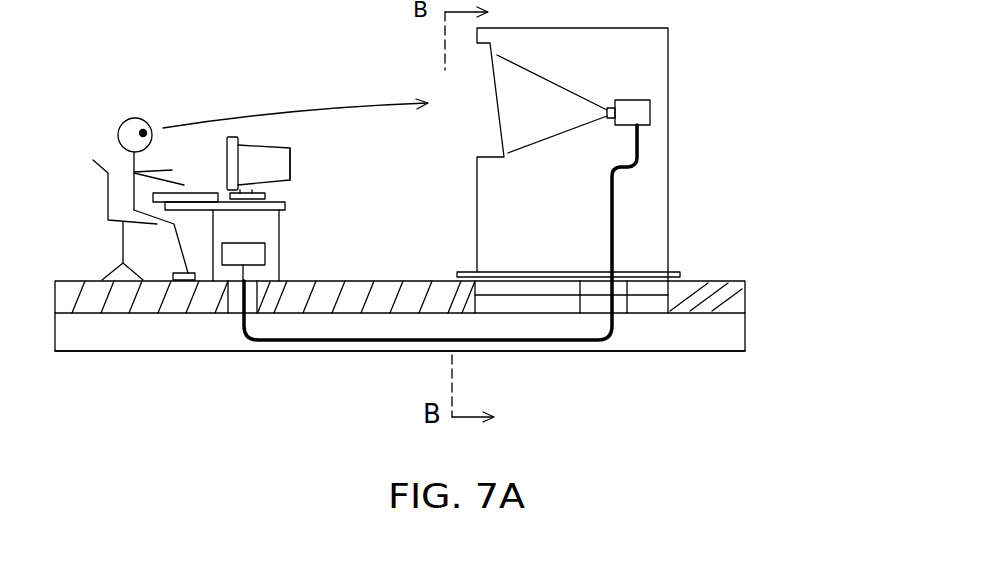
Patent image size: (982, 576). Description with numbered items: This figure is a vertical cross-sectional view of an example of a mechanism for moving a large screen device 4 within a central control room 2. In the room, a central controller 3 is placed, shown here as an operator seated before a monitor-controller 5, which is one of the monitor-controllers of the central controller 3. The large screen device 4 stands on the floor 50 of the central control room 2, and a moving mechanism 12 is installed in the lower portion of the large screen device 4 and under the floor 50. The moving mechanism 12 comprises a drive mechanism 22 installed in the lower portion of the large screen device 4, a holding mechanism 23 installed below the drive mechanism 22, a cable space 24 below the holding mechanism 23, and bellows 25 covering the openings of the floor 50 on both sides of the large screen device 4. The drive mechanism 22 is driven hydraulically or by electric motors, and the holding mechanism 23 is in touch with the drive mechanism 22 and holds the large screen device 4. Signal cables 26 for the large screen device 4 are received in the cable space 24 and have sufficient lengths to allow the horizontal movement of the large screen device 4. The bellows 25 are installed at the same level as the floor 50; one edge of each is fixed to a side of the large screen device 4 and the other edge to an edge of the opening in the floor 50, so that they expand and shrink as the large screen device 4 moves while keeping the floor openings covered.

The central control room 2 is at (805, 96).
The central controller 3 is at (305, 188).
The large screen device 4 is at (668, 67).
The monitor-controller 5 is at (292, 145).
The floor 50 is at (318, 279).
The moving mechanism 12 is at (838, 204).
The drive mechanism 22 is at (665, 300).
The holding mechanism 23 is at (742, 294).
The cable space 24 is at (712, 334).
The bellows 25 is at (648, 271).
The signal cables 26 is at (613, 323).